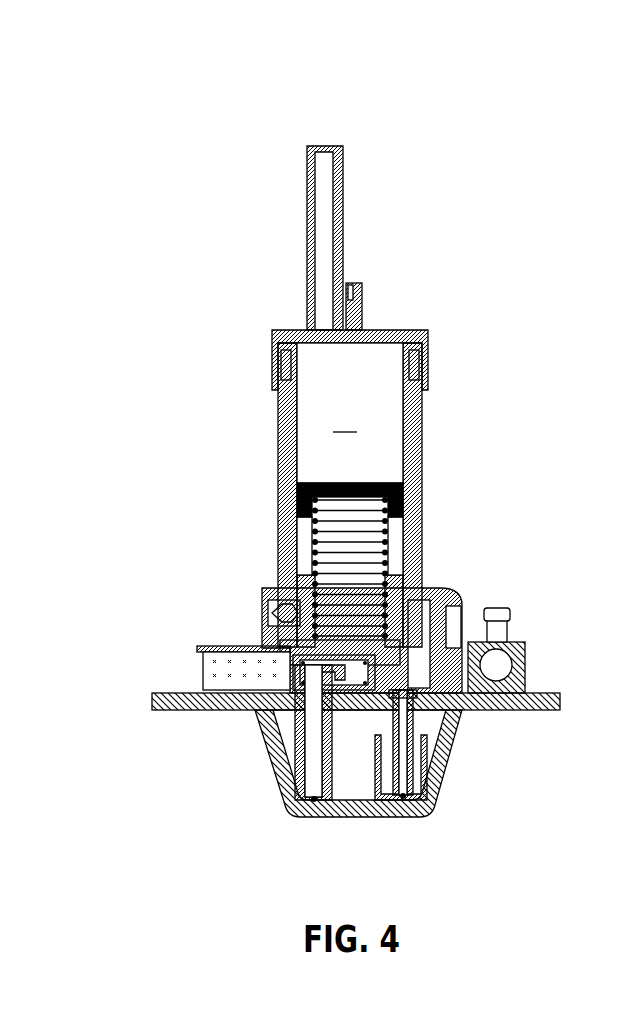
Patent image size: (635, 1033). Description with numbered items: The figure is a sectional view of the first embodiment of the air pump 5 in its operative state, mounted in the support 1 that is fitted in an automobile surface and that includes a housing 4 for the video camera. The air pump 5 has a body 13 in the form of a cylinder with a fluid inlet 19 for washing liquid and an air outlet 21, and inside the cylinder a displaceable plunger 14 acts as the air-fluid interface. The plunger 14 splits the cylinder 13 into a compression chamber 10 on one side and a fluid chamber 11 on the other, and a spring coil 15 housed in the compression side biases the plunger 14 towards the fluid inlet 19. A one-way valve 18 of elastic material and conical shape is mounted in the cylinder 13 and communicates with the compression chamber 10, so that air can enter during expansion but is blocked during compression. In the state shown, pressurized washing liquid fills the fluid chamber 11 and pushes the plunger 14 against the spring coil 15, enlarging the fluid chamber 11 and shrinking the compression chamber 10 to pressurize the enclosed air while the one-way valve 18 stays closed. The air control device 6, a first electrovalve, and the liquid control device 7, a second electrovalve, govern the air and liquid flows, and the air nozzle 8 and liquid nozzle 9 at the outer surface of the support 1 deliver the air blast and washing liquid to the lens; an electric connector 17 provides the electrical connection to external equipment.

The support 1 is at (455, 732).
The housing 4 is at (462, 600).
The air pump 5 is at (272, 372).
The air control device 6 is at (219, 667).
The liquid control device 7 is at (500, 648).
The air nozzle 8 is at (315, 773).
The liquid nozzle 9 is at (400, 787).
The compression chamber 10 is at (301, 527).
The fluid chamber 11 is at (350, 413).
The body 13 is at (287, 424).
The plunger 14 is at (368, 483).
The spring coil 15 is at (388, 557).
The electric connector 17 is at (313, 305).
The one-way valve 18 is at (278, 601).
The fluid inlet 19 is at (356, 297).
The air outlet 21 is at (345, 683).